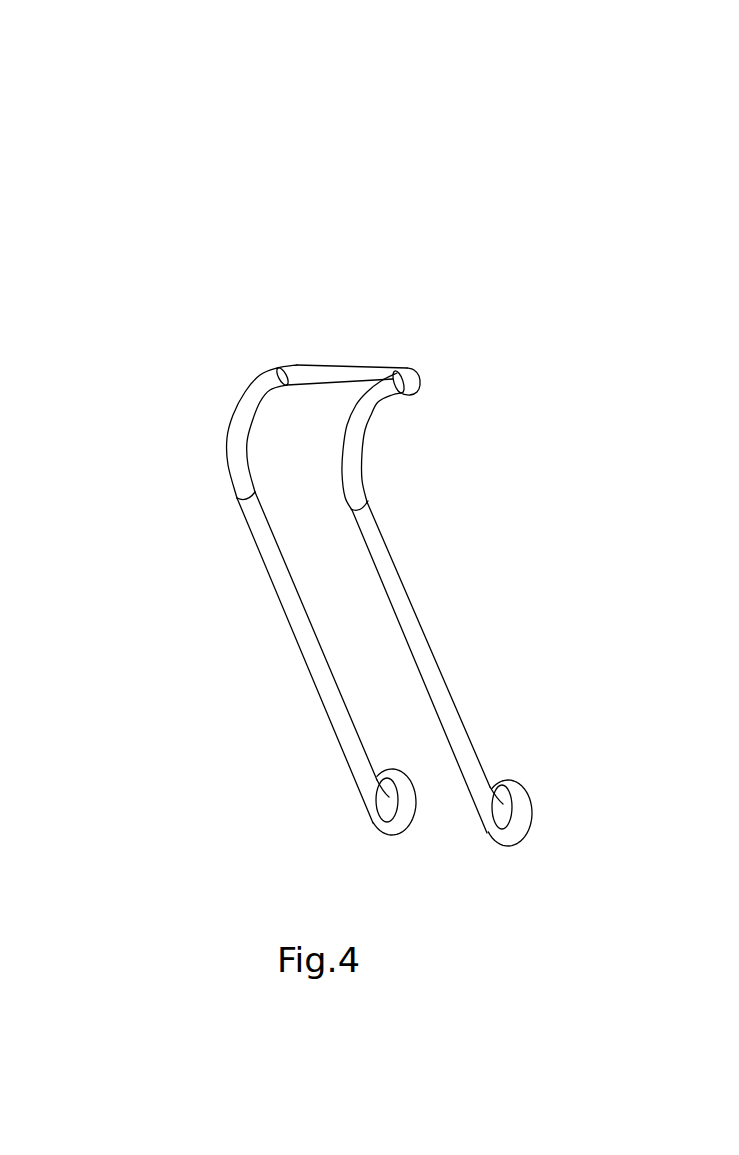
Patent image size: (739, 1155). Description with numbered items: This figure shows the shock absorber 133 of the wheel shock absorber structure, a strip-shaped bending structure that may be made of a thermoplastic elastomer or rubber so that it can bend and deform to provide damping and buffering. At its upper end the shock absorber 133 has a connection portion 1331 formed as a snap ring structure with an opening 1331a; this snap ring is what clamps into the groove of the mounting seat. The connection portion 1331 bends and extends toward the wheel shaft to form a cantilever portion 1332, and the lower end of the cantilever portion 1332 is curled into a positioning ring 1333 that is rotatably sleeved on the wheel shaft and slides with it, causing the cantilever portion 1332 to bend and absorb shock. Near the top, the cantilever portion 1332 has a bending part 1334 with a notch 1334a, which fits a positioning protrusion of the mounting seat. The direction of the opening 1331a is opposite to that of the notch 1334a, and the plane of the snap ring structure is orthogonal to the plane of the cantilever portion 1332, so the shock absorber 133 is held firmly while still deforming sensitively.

The shock absorber 133 is at (88, 55).
The connection portion 1331 is at (412, 375).
The opening 1331a is at (290, 411).
The cantilever portion 1332 is at (395, 591).
The positioning ring 1333 is at (517, 812).
The bending part 1334 is at (356, 452).
The notch 1334a is at (396, 430).